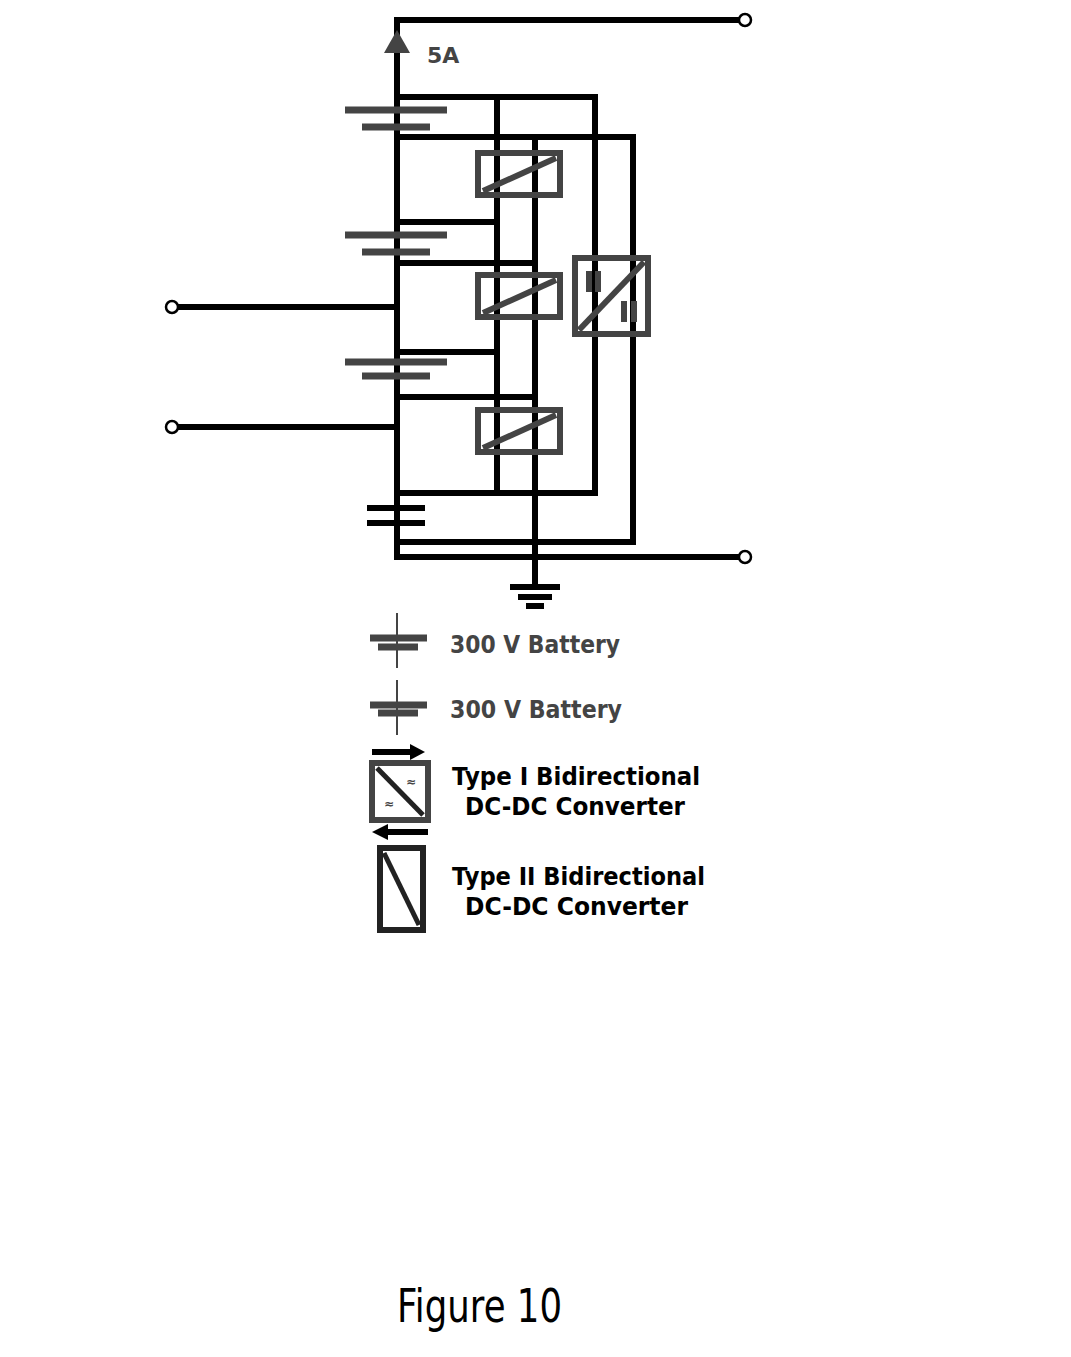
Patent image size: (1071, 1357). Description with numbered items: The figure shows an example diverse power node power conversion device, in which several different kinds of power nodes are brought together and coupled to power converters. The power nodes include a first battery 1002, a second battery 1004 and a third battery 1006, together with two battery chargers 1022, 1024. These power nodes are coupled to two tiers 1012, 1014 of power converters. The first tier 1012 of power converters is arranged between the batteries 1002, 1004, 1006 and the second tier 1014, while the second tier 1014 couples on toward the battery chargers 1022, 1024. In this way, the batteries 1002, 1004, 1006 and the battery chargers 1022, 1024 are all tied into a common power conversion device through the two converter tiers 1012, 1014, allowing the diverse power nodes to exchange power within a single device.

The battery 1002 is at (328, 76).
The battery 1004 is at (328, 189).
The battery 1006 is at (330, 353).
The first tier of power converters 1012 is at (472, 149).
The second tier of power converters 1014 is at (579, 250).
The battery charger 1022 is at (108, 286).
The battery charger 1024 is at (746, 230).